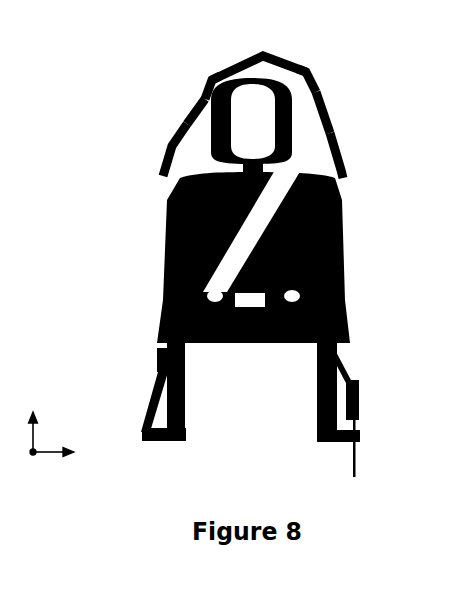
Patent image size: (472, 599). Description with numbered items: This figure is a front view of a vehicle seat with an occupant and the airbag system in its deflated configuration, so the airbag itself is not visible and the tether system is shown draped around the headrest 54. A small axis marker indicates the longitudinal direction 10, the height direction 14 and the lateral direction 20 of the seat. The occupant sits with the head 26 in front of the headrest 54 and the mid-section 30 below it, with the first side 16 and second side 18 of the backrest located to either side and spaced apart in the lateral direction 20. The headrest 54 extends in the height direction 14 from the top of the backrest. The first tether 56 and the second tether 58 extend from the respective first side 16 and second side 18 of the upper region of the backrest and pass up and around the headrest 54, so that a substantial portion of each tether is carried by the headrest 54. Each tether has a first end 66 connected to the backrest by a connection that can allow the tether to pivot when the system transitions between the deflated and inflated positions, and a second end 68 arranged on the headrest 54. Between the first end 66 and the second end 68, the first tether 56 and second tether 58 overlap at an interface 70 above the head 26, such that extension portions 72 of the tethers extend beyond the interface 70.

The longitudinal direction 10 is at (22, 453).
The height direction 14 is at (35, 424).
The first side 16 is at (162, 193).
The second side 18 is at (345, 192).
The lateral direction 20 is at (64, 453).
The head 26 is at (251, 121).
The mid-section 30 is at (253, 256).
The headrest 54 is at (287, 115).
The first tether 56 is at (178, 105).
The second tether 58 is at (343, 107).
The first end 66 is at (168, 165).
The second end 68 is at (210, 87).
The interface 70 is at (257, 55).
The extension portions 72 is at (307, 92).